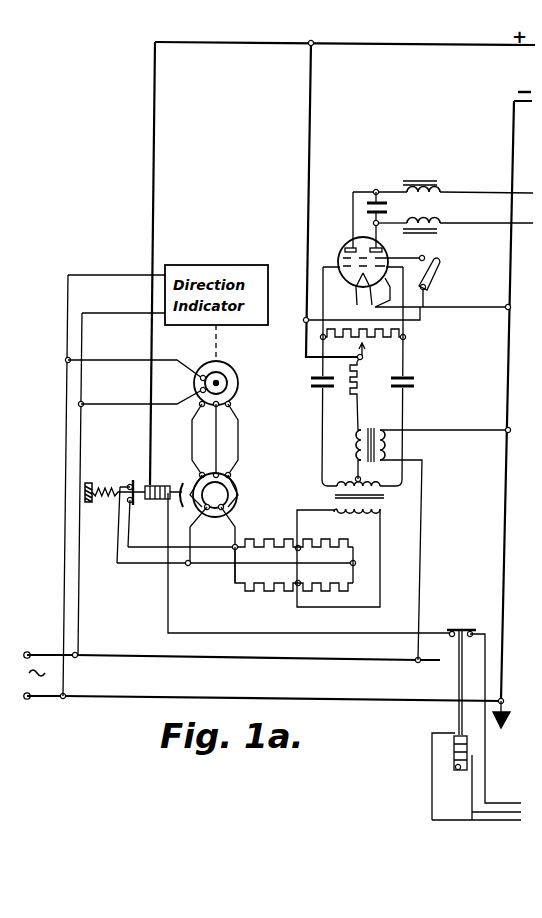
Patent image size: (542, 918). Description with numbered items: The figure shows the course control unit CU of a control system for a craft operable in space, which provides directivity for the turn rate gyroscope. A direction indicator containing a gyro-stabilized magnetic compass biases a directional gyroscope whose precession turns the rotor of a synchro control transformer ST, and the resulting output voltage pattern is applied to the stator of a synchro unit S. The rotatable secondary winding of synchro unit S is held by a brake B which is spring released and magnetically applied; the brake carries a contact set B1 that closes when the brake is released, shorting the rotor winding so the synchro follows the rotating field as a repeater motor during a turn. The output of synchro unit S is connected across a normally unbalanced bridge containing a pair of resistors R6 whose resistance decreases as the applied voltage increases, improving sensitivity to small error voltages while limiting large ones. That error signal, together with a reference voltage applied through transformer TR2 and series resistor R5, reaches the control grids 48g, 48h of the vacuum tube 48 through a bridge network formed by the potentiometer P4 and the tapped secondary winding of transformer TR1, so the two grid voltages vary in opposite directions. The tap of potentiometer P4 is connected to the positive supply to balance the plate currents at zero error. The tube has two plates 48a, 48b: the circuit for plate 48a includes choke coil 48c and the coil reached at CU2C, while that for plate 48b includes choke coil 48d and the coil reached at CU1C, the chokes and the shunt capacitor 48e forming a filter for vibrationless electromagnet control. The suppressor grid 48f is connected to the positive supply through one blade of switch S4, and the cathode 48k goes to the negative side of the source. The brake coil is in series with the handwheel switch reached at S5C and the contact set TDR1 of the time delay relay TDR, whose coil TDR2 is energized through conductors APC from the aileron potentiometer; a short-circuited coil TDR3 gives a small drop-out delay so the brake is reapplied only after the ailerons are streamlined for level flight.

The vacuum tube 48 is at (406, 264).
The plate 48a is at (345, 240).
The plate 48b is at (370, 240).
The choke coil 48c is at (436, 186).
The choke coil 48d is at (432, 234).
The capacitor 48e is at (398, 205).
The suppressor grid 48f is at (383, 252).
The control grid 48g is at (344, 289).
The control grid 48h is at (381, 289).
The cathode 48k is at (370, 295).
The switch S4 is at (426, 290).
The course control unit CU is at (274, 255).
The coil CU1 connection CU1C is at (500, 190).
The coil CU2 connection CU2C is at (500, 221).
The potentiometer P4 is at (368, 344).
The series resistor R5 is at (362, 378).
The transformer TR2 is at (390, 424).
The transformer TR1 is at (334, 490).
The resistors R6 is at (338, 539).
The synchro control transformer ST is at (262, 386).
The synchro unit S is at (254, 500).
The brake B is at (167, 484).
The contact set B1 is at (134, 473).
The contact set TDR1 is at (446, 631).
The time delay relay TDR is at (449, 727).
The coil TDR2 is at (454, 751).
The short circuited coil TDR3 is at (453, 769).
The conductors APC is at (472, 812).
The switch S5 connection S5C is at (520, 802).